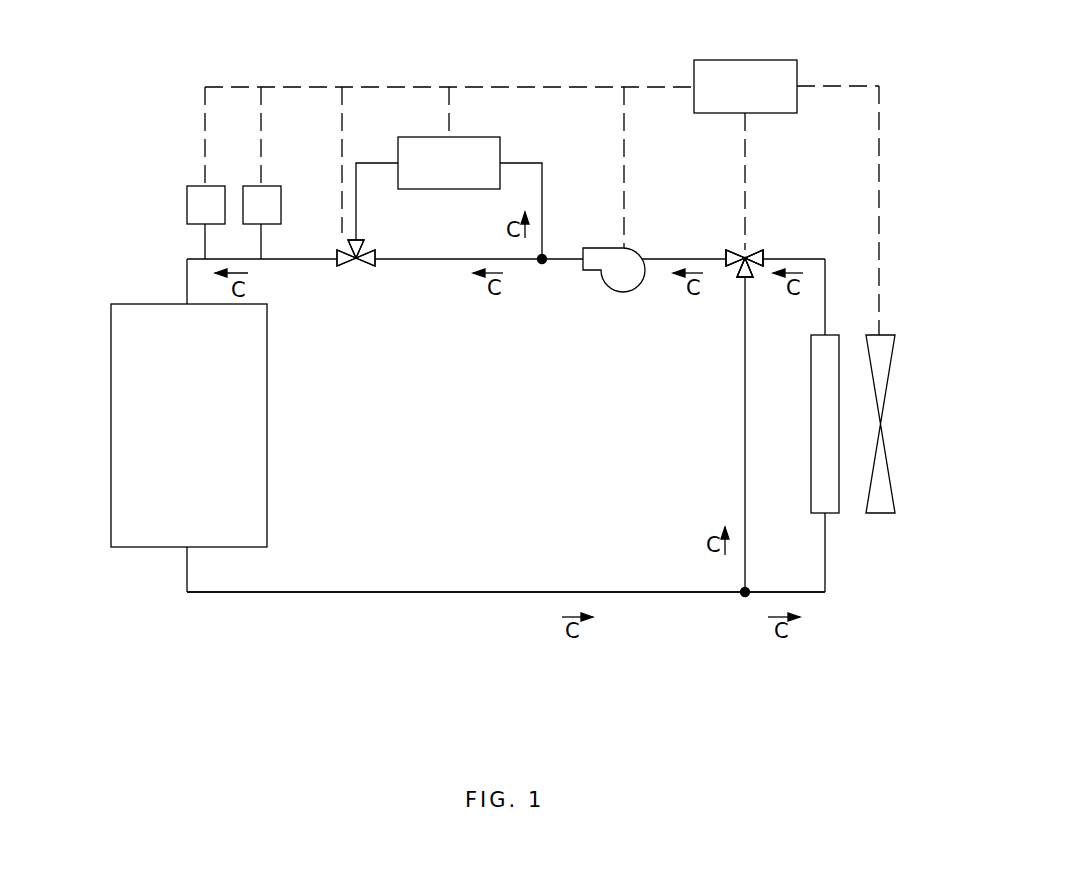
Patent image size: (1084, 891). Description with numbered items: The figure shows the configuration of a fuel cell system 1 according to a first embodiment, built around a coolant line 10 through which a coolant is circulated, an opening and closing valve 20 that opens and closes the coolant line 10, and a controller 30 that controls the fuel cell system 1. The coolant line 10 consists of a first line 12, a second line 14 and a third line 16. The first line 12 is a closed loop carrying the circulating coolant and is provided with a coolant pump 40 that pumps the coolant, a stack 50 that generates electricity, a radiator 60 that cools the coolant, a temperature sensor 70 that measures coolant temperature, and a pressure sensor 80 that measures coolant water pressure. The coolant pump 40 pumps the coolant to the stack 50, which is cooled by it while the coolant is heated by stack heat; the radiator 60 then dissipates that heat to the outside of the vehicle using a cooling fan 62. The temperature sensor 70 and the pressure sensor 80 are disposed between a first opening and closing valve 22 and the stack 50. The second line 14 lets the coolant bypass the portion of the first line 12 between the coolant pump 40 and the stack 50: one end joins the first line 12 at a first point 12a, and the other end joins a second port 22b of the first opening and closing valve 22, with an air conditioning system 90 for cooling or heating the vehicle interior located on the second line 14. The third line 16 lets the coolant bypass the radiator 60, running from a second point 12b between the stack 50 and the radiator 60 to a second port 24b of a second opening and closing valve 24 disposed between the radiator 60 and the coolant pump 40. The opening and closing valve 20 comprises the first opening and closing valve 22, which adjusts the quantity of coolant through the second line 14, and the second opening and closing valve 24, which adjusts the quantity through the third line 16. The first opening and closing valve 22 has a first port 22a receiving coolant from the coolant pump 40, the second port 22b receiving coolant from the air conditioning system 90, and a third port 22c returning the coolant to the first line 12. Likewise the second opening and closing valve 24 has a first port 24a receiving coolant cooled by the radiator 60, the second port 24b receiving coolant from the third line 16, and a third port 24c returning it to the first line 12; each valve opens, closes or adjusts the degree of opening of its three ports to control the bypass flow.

The fuel cell system 1 is at (128, 23).
The coolant line 10 is at (350, 630).
The first line 12 is at (507, 592).
The first point 12a is at (542, 263).
The second point 12b is at (745, 597).
The second line 14 is at (544, 210).
The third line 16 is at (745, 433).
The opening and closing valve 20 is at (727, 218).
The first opening and closing valve 22 is at (356, 263).
The first port 22a is at (370, 265).
The second port 22b is at (362, 238).
The third port 22c is at (342, 265).
The second opening and closing valve 24 is at (747, 254).
The first port 24a is at (760, 252).
The second port 24b is at (740, 276).
The third port 24c is at (730, 252).
The controller 30 is at (745, 60).
The coolant pump 40 is at (623, 292).
The stack 50 is at (111, 422).
The radiator 60 is at (835, 515).
The cooling fan 62 is at (893, 352).
The temperature sensor 70 is at (187, 203).
The pressure sensor 80 is at (281, 203).
The air conditioning system 90 is at (502, 137).